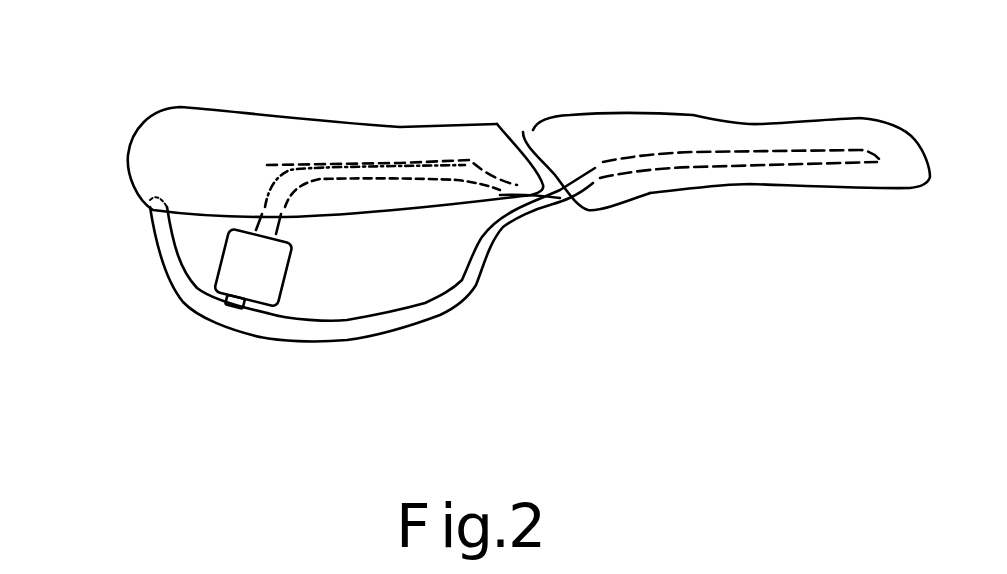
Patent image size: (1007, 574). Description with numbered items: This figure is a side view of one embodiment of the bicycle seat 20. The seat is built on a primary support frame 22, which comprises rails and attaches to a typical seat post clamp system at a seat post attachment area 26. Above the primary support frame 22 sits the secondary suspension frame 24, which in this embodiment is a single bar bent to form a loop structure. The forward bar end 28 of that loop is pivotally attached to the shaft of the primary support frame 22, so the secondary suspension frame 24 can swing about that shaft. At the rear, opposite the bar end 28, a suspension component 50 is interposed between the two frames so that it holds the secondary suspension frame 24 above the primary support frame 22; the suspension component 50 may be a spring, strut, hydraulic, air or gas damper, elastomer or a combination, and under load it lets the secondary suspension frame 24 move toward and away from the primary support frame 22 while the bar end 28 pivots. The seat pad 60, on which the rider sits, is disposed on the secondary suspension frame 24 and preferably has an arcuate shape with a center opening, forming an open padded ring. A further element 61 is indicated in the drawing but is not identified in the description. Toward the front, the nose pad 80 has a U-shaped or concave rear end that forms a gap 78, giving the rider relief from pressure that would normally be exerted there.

The bicycle seat 20 is at (215, 75).
The primary support frame 22 is at (190, 291).
The secondary suspension frame 24 is at (481, 172).
The seat post attachment area 26 is at (373, 326).
The bar end 28 is at (535, 160).
The suspension component 50 is at (257, 288).
The seat pad 60 is at (240, 133).
The conductor 61 is at (357, 163).
The gap 78 is at (523, 132).
The nose pad 80 is at (814, 132).